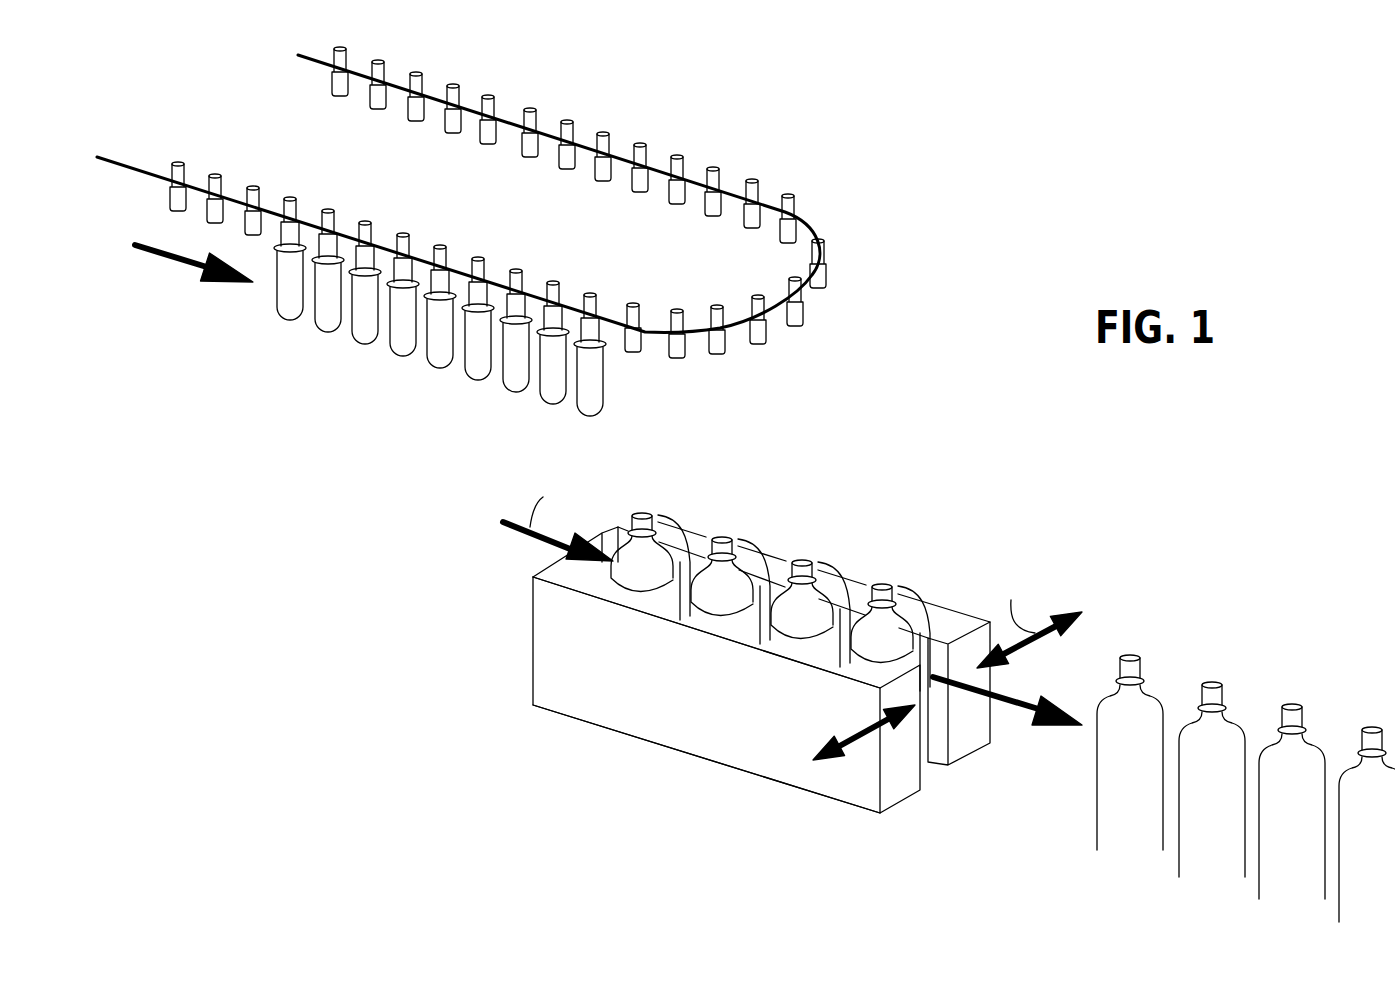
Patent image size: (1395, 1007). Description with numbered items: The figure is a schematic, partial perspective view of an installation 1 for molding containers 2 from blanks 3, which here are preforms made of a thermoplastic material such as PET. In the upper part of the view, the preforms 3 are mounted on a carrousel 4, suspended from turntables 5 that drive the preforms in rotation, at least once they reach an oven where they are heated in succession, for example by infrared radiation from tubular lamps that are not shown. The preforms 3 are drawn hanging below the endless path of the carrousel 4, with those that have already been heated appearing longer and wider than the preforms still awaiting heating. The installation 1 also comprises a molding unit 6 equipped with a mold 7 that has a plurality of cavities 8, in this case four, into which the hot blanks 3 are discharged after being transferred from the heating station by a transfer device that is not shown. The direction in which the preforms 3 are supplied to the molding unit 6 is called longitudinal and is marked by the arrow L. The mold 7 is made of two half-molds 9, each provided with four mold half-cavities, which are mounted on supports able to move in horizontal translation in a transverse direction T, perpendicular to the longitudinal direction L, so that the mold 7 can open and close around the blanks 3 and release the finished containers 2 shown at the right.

The installation 1 is at (945, 199).
The containers 2 is at (897, 634).
The blanks 3 is at (604, 390).
The carrousel 4 is at (697, 155).
The turntables 5 is at (638, 341).
The molding unit 6 is at (858, 480).
The mold 7 is at (535, 668).
The cavities 8 is at (842, 598).
The half-molds 9 is at (710, 528).